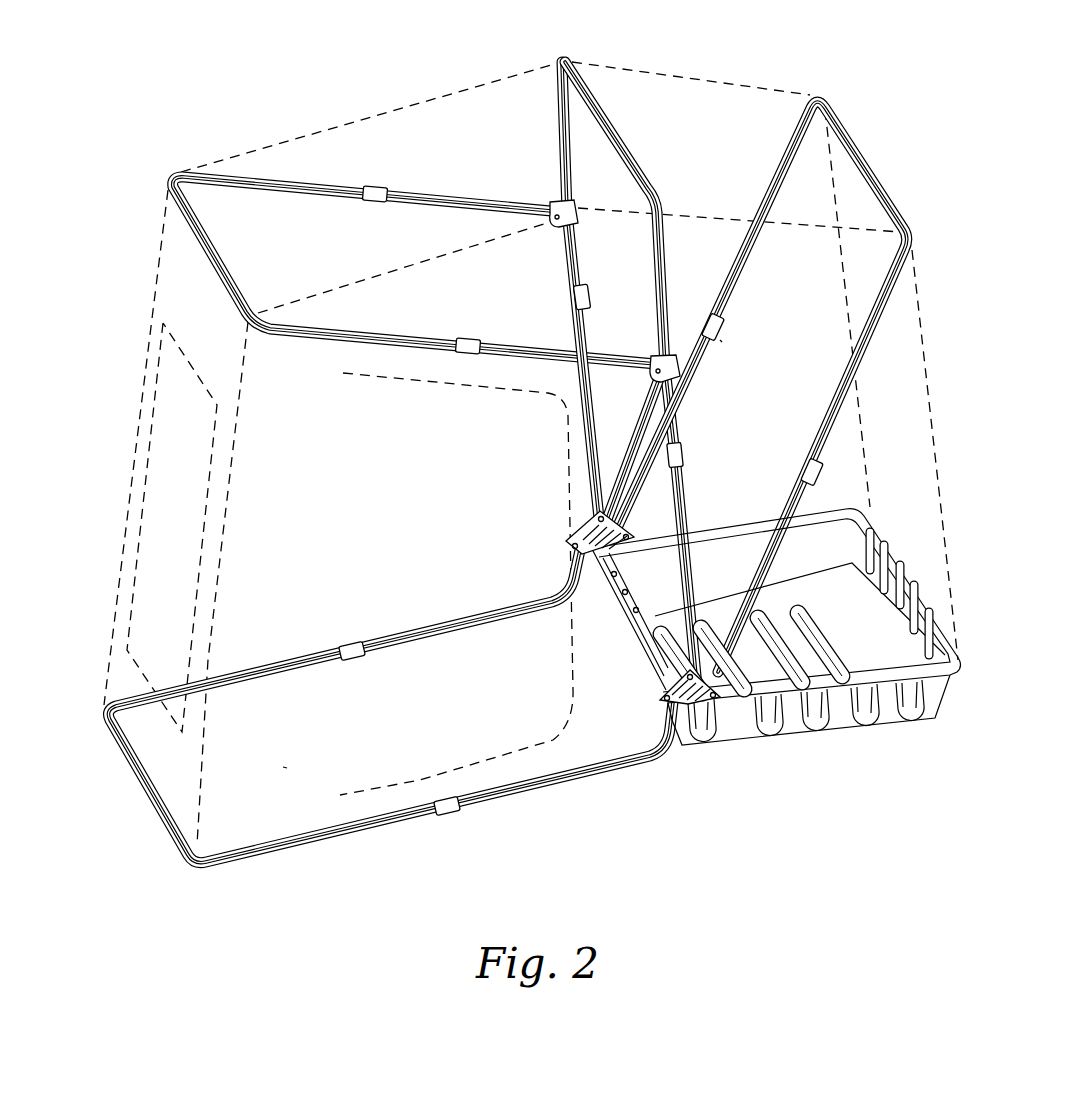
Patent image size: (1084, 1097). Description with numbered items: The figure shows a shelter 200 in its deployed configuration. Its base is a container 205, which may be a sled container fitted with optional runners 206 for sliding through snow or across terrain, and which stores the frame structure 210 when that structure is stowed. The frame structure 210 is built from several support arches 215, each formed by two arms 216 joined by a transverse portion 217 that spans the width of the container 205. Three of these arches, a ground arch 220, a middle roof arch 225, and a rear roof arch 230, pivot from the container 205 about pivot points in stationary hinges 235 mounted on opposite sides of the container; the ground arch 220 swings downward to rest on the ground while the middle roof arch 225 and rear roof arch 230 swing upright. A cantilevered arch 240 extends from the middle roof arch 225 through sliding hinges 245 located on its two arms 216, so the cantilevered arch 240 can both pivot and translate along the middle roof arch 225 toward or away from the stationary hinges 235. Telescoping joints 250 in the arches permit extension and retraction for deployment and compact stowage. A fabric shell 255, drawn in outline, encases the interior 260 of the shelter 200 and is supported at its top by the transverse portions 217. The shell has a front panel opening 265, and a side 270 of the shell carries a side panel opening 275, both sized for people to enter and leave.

The shelter 200 is at (142, 145).
The container 205 is at (803, 737).
The runners 206 is at (765, 742).
The frame structure 210 is at (715, 100).
The support arches 215 is at (509, 472).
The arms 216 is at (600, 430).
The transverse portion 217 is at (620, 140).
The ground arch 220 is at (390, 706).
The middle roof arch 225 is at (586, 347).
The rear roof arch 230 is at (890, 102).
The stationary hinges 235 is at (613, 507).
The cantilevered arch 240 is at (200, 203).
The sliding hinges 245 is at (558, 203).
The telescoping joints 250 is at (365, 200).
The fabric shell 255 is at (153, 293).
The interior 260 is at (761, 357).
The front panel opening 265 is at (165, 498).
The side 270 is at (283, 767).
The side panel opening 275 is at (565, 673).